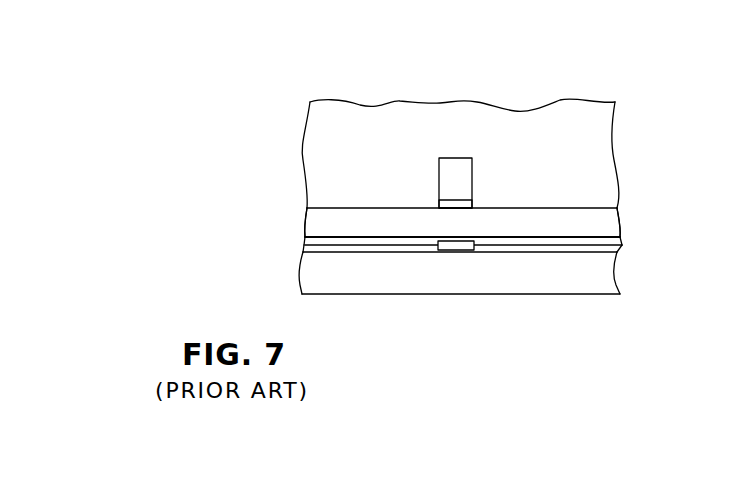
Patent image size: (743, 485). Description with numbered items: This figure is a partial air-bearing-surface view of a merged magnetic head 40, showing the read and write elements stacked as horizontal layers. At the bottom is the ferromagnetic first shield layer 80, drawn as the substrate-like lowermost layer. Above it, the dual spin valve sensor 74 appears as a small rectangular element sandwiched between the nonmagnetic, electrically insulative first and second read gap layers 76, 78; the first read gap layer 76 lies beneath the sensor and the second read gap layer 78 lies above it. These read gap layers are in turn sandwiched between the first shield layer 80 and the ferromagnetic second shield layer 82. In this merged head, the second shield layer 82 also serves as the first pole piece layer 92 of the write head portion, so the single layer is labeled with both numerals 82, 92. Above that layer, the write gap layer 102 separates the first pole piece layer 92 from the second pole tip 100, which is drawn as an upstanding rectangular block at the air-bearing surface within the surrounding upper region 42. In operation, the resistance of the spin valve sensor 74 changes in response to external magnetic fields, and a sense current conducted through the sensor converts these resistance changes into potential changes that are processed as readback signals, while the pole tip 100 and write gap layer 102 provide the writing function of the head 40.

The merged magnetic head 40 is at (447, 206).
The insulating layer 42 is at (313, 131).
The second pole tip 100 is at (461, 165).
The write gap layer 102 is at (455, 201).
The second shield layer 82 is at (307, 228).
The first pole piece layer 92 is at (463, 222).
The second read gap layer 78 is at (578, 240).
The dual spin valve sensor 74 is at (455, 250).
The first read gap layer 76 is at (365, 253).
The first shield layer 80 is at (612, 275).